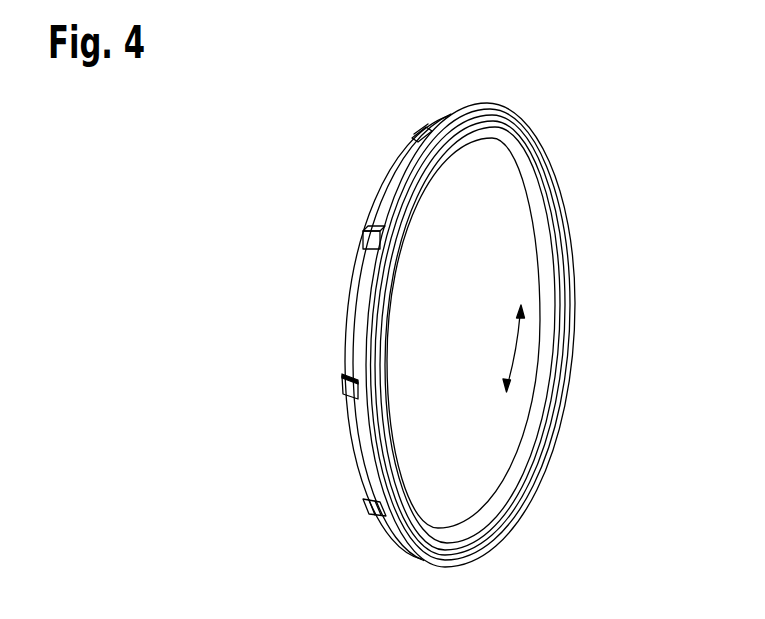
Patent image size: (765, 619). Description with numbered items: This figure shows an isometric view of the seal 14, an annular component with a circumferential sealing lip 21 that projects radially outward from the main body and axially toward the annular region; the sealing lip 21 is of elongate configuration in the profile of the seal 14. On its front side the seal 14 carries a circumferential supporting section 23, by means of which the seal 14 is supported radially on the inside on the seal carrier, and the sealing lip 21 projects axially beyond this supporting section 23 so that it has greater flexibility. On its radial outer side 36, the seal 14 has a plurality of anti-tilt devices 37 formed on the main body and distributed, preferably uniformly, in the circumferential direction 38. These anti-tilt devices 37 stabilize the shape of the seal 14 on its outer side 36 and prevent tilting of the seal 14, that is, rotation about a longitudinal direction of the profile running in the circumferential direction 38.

The seal 14 is at (465, 311).
The sealing lip 21 is at (514, 110).
The supporting section 23 is at (401, 306).
The radial outer side 36 is at (386, 172).
The anti-tilt devices 37 is at (416, 131).
The circumferential direction 38 is at (515, 350).